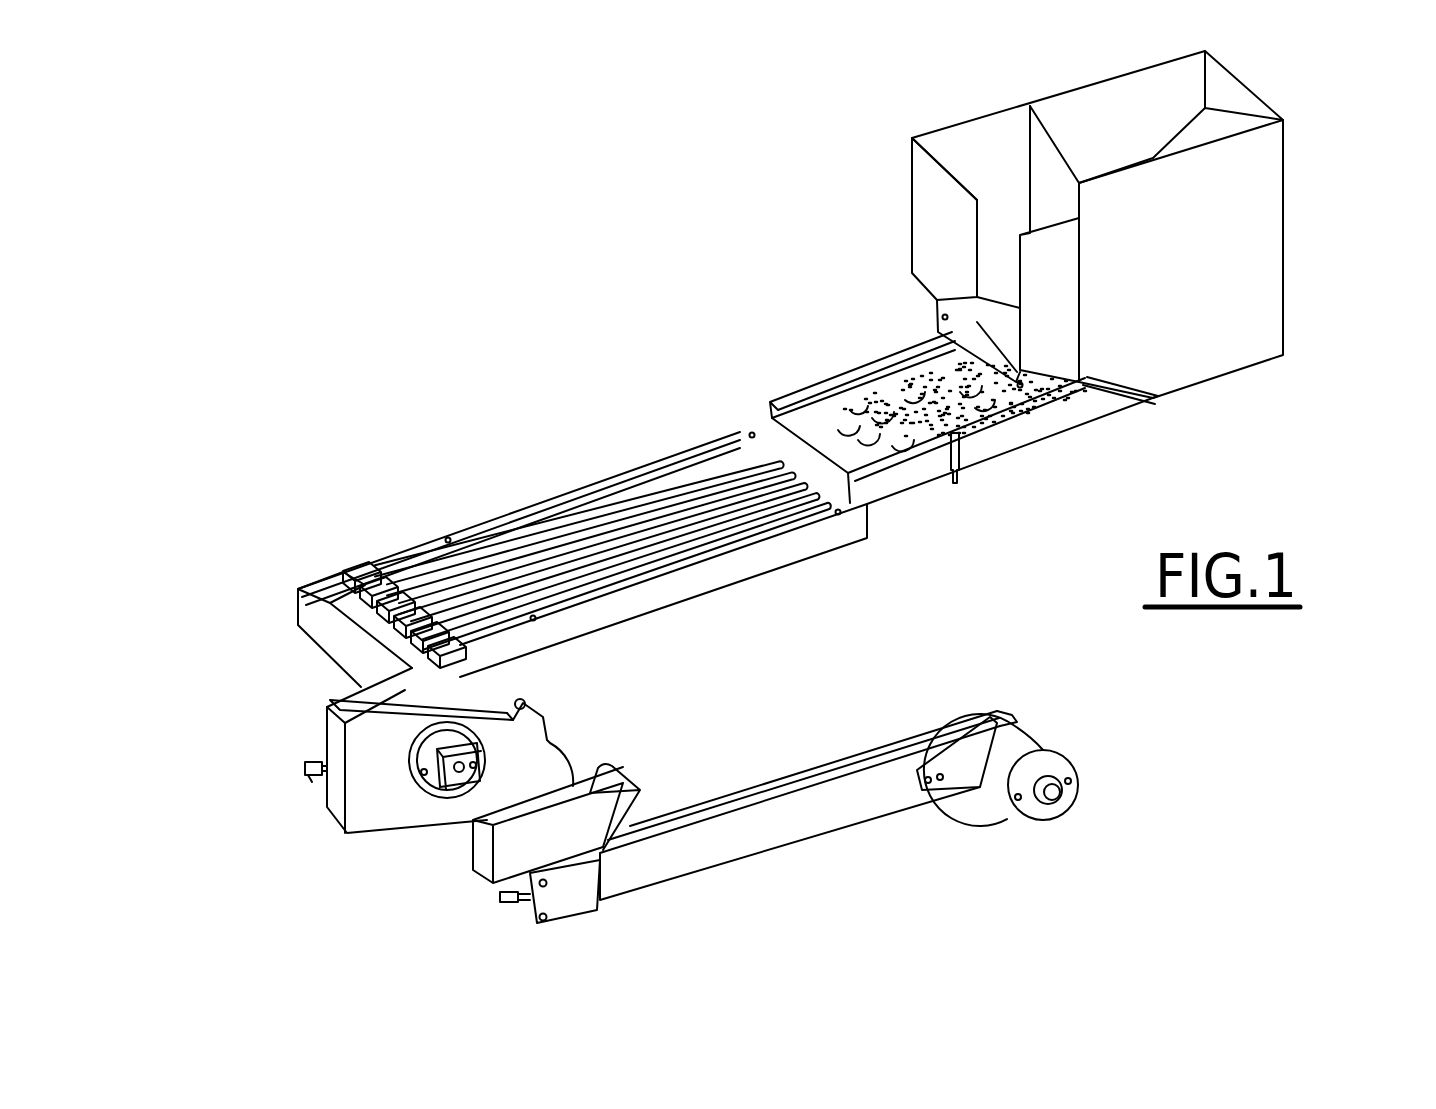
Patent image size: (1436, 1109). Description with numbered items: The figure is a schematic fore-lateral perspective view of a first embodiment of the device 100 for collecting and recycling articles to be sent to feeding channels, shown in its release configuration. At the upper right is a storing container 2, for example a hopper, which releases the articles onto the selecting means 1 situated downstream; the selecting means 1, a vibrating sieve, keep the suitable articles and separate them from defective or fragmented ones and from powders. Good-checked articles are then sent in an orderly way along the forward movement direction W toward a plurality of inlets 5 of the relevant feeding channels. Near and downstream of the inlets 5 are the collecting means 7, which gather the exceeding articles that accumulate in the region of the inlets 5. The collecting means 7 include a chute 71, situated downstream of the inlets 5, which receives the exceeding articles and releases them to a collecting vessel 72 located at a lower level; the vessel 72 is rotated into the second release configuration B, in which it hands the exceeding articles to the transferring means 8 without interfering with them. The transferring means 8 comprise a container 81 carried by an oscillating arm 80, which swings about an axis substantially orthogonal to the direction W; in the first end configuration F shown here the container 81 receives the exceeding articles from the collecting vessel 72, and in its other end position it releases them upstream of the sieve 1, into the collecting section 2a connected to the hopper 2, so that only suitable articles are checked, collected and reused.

The device 100 is at (348, 231).
The selecting means 1 is at (820, 352).
The container 2 is at (1300, 272).
The collecting section 2a is at (995, 160).
The inlets 5 is at (380, 567).
The collecting means 7 is at (583, 718).
The chute 71 is at (317, 628).
The collecting vessel 72 is at (385, 733).
The transferring means 8 is at (846, 705).
The oscillating arm 80 is at (887, 797).
The container 81 is at (603, 817).
The second release configuration B is at (395, 848).
The first end configuration F is at (765, 858).
The forward movement direction W is at (590, 455).